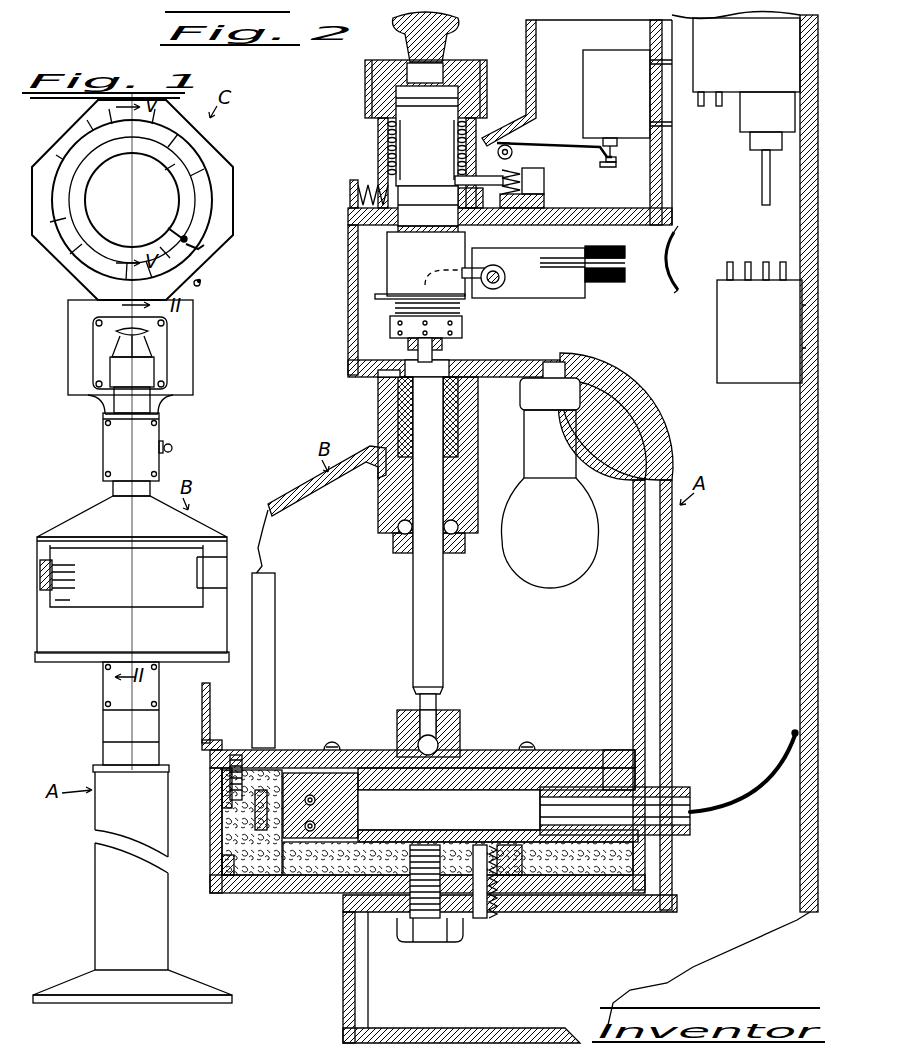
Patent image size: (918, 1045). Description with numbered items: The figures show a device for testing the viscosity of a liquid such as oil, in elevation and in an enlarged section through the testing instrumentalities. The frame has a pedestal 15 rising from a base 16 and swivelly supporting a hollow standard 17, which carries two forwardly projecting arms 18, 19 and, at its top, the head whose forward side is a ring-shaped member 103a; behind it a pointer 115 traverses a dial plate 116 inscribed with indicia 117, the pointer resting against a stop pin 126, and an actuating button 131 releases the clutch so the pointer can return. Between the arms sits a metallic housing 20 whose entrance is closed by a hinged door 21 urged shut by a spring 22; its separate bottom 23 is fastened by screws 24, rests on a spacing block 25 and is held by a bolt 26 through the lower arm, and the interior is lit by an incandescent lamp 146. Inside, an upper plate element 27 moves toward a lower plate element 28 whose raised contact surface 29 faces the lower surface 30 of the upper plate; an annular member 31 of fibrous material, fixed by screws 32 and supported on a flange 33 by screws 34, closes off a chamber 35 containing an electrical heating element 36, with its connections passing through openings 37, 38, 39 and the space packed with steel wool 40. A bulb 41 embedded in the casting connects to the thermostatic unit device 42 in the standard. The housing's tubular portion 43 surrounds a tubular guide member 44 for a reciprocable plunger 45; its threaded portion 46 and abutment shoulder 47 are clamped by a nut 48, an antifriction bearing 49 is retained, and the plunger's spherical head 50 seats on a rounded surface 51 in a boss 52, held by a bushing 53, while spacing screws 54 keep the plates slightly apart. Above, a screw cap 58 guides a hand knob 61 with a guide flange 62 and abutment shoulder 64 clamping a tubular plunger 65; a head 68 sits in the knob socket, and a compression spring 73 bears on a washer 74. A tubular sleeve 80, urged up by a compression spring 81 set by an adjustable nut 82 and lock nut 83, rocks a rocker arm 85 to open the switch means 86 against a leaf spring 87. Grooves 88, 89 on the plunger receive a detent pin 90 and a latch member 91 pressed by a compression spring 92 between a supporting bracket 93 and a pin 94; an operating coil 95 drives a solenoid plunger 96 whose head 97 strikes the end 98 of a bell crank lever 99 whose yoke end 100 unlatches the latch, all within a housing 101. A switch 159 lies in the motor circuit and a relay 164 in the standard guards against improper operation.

In FIG. 1, the pedestal 15 is at (110, 882).
In FIG. 1, the base 16 is at (85, 985).
In FIG. 1, the hollow standard 17 is at (158, 488).
In FIG. 2, the hollow standard 17 is at (672, 672).
In FIG. 1, the arm 18 is at (118, 457).
In FIG. 2, the arm 18 is at (380, 374).
In FIG. 1, the arm 19 is at (110, 688).
In FIG. 2, the arm 19 is at (403, 1030).
In FIG. 1, the metallic housing 20 is at (227, 568).
In FIG. 2, the metallic housing 20 is at (288, 500).
In FIG. 1, the hinged door 21 is at (175, 560).
In FIG. 2, the hinged door 21 is at (262, 684).
In FIG. 1, the spring 22 is at (38, 566).
In FIG. 2, the bottom 23 is at (280, 892).
In FIG. 2, the screws 24 is at (222, 878).
In FIG. 2, the spacing block 25 is at (470, 945).
In FIG. 2, the bolt 26 is at (428, 930).
In FIG. 2, the upper plate element 27 is at (462, 756).
In FIG. 2, the lower plate element 28 is at (462, 786).
In FIG. 2, the contact surface 29 is at (368, 768).
In FIG. 2, the lower surface 30 is at (352, 745).
In FIG. 2, the annular member 31 is at (608, 750).
In FIG. 2, the screws 32 is at (262, 776).
In FIG. 2, the inwardly extending flange 33 is at (228, 764).
In FIG. 2, the screws 34 is at (224, 792).
In FIG. 2, the chamber 35 is at (250, 812).
In FIG. 2, the electrical heating element 36 is at (320, 804).
In FIG. 2, the opening 37 is at (480, 920).
In FIG. 2, the opening 38 is at (495, 910).
In FIG. 2, the opening 39 is at (510, 910).
In FIG. 2, the steel wool 40 is at (258, 872).
In FIG. 2, the bulb 41 is at (520, 814).
In FIG. 2, the unit device 42 is at (746, 111).
In FIG. 2, the tubular portion 43 is at (468, 478).
In FIG. 2, the tubular guide member 44 is at (465, 545).
In FIG. 2, the reciprocable plunger 45 is at (428, 603).
In FIG. 2, the threaded portion 46 is at (442, 344).
In FIG. 2, the abutment shoulder 47 is at (450, 358).
In FIG. 2, the nut 48 is at (398, 372).
In FIG. 2, the antifriction bearing 49 is at (395, 500).
In FIG. 2, the spherical head 50 is at (452, 553).
In FIG. 2, the rounded surface 51 is at (388, 172).
In FIG. 2, the boss 52 is at (334, 748).
In FIG. 2, the bushing 53 is at (442, 690).
In FIG. 2, the spacing screws 54 is at (528, 748).
In FIG. 2, the screw cap 58 is at (378, 88).
In FIG. 1, the hand knob 61 is at (148, 345).
In FIG. 2, the hand knob 61 is at (445, 40).
In FIG. 2, the guide flange 62 is at (368, 75).
In FIG. 2, the abutment shoulder 64 is at (420, 98).
In FIG. 2, the tubular plunger 65 is at (427, 150).
In FIG. 2, the head 68 is at (437, 72).
In FIG. 2, the compression spring 73 is at (386, 147).
In FIG. 2, the washer 74 is at (380, 128).
In FIG. 2, the tubular sleeve 80 is at (426, 264).
In FIG. 2, the compression spring 81 is at (385, 296).
In FIG. 2, the adjustable nut 82 is at (395, 308).
In FIG. 2, the lock nut 83 is at (390, 328).
In FIG. 2, the rocker arm 85 is at (500, 272).
In FIG. 2, the switch means 86 is at (610, 253).
In FIG. 2, the leaf spring 87 is at (585, 278).
In FIG. 2, the groove 88 is at (428, 204).
In FIG. 2, the groove 89 is at (430, 232).
In FIG. 2, the detent pin 90 is at (362, 186).
In FIG. 2, the latch member 91 is at (540, 180).
In FIG. 2, the compression spring 92 is at (525, 202).
In FIG. 2, the supporting bracket 93 is at (525, 158).
In FIG. 2, the pin 94 is at (478, 260).
In FIG. 2, the operating coil 95 is at (627, 94).
In FIG. 2, the solenoid plunger 96 is at (625, 152).
In FIG. 2, the head 97 is at (608, 167).
In FIG. 2, the end 98 is at (608, 138).
In FIG. 2, the bell crank lever 99 is at (515, 148).
In FIG. 2, the yoke end 100 is at (470, 178).
In FIG. 2, the housing 101 is at (533, 82).
In FIG. 1, the ring-shaped member 103a is at (219, 152).
In FIG. 1, the pointer 115 is at (200, 247).
In FIG. 1, the dial plate 116 is at (198, 186).
In FIG. 1, the indicia 117 is at (80, 243).
In FIG. 1, the stop pin 126 is at (187, 240).
In FIG. 1, the actuating button 131 is at (201, 283).
In FIG. 2, the incandescent lamp 146 is at (572, 512).
In FIG. 1, the switch 159 is at (170, 447).
In FIG. 2, the relay 164 is at (761, 322).